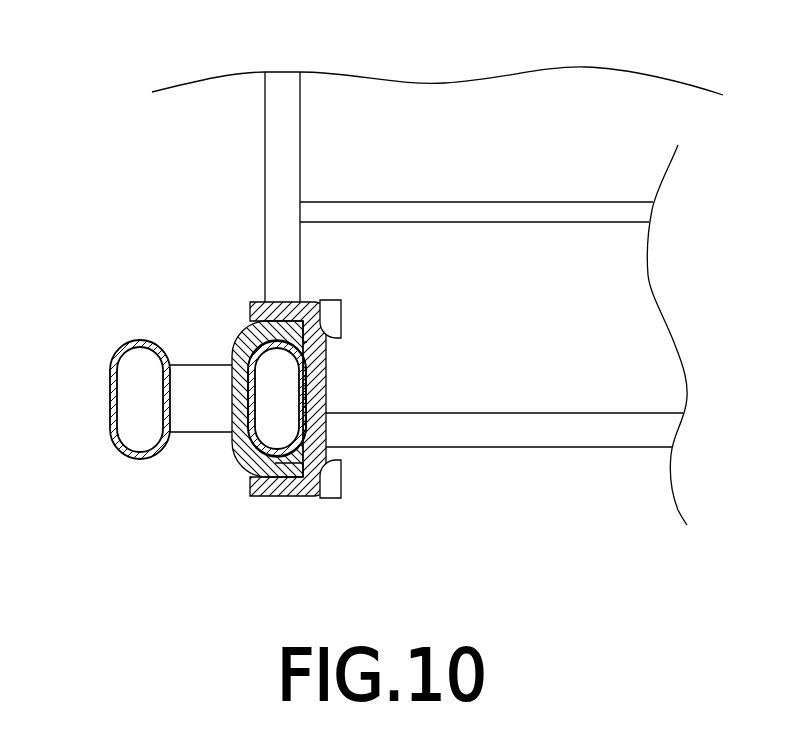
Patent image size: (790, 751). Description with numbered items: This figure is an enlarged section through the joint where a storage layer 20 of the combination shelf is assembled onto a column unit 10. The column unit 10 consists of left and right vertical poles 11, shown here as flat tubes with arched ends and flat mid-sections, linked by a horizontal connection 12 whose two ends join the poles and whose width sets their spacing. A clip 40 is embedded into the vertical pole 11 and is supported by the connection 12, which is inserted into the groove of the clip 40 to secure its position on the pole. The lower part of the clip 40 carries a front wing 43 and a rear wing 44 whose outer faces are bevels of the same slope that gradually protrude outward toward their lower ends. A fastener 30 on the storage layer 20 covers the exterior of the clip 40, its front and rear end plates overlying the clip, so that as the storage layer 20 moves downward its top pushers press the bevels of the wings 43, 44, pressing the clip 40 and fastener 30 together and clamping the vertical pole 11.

The column unit 10 is at (162, 397).
The vertical pole 11 is at (154, 458).
The connection 12 is at (196, 385).
The storage layer 20 is at (550, 217).
The fastener 30 is at (328, 388).
The clip 40 is at (247, 348).
The front wing 43 is at (334, 485).
The rear wing 44 is at (333, 312).